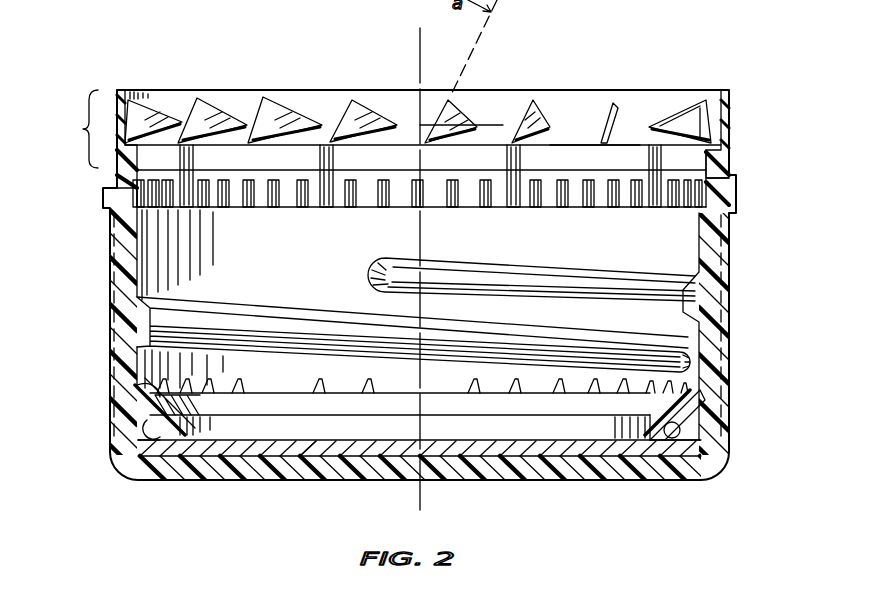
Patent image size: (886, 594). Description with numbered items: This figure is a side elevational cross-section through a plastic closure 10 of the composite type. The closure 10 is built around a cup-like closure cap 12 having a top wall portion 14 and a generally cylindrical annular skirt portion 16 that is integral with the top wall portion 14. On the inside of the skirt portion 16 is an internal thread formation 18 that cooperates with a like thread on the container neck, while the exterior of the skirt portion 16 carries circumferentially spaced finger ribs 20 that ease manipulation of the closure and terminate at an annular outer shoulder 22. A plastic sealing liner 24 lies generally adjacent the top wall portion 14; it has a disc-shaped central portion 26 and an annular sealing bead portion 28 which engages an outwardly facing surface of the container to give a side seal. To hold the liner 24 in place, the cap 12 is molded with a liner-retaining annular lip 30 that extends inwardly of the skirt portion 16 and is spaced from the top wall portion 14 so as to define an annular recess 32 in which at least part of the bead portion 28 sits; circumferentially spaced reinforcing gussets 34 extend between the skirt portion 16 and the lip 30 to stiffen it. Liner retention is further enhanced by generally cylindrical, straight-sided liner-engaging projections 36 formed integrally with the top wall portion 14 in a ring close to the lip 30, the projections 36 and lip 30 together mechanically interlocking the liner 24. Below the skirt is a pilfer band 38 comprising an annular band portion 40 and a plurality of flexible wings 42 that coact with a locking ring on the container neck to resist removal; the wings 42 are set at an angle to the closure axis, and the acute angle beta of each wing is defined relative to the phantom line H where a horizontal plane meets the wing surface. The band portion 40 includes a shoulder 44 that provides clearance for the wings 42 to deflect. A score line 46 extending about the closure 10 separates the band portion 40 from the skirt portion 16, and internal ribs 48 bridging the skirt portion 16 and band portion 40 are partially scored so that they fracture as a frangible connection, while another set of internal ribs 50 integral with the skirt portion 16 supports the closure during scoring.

The plastic closure 10 is at (719, 67).
The closure cap 12 is at (732, 353).
The top wall portion 14 is at (470, 481).
The skirt portion 16 is at (125, 280).
The internal thread formation 18 is at (372, 320).
The finger ribs 20 is at (729, 258).
The annular outer shoulder 22 is at (103, 190).
The plastic sealing liner 24 is at (397, 413).
The disc-shaped central portion 26 is at (316, 446).
The annular sealing bead portion 28 is at (660, 452).
The liner-retaining annular lip 30 is at (142, 397).
The annular recess 32 is at (157, 428).
The reinforcing gussets 34 is at (492, 393).
The liner-engaging projections 36 is at (152, 442).
The pilfer band 38 is at (94, 129).
The annular band portion 40 is at (117, 97).
The wings 42 is at (292, 100).
The shoulder 44 is at (575, 138).
The score line 46 is at (396, 176).
The internal ribs 48 is at (180, 162).
The internal ribs 50 is at (262, 207).
The phantom line H is at (497, 125).